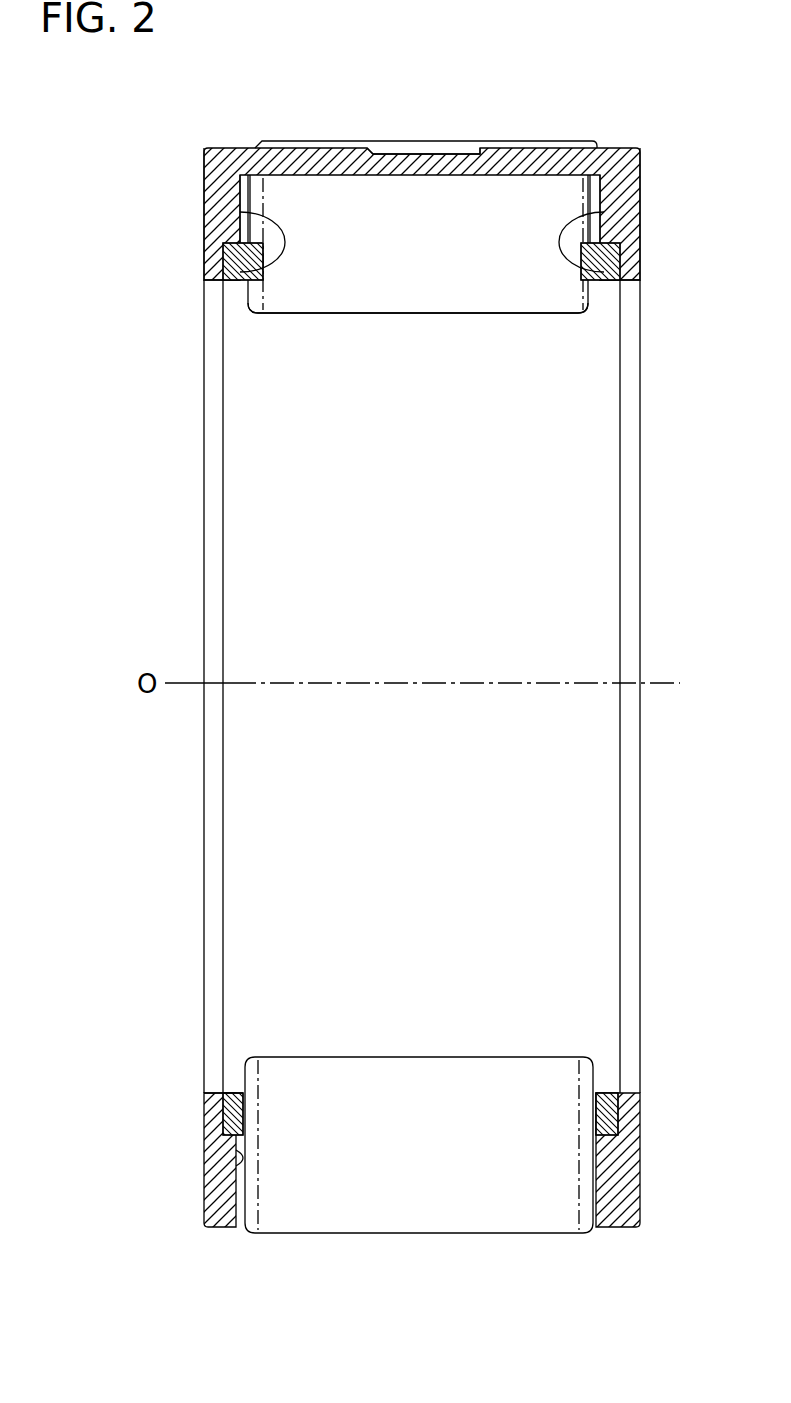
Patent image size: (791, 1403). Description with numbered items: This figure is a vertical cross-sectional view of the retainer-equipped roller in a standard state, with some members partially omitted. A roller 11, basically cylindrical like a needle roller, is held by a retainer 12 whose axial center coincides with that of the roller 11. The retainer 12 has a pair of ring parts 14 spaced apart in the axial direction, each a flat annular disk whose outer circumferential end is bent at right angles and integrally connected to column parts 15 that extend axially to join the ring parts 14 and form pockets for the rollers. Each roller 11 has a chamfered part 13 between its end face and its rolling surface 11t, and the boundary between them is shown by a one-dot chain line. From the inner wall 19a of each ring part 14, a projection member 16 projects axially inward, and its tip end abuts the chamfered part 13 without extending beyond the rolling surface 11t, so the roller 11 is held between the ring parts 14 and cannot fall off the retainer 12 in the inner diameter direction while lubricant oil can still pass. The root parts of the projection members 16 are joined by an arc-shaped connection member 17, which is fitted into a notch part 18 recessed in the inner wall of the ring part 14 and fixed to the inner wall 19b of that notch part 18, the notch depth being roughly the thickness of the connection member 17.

The roller 11 is at (582, 331).
The roller rolling surface 11t is at (342, 316).
The retainer 12 is at (182, 525).
The chamfered part 13 is at (253, 303).
The ring part 14 is at (204, 183).
The column part 15 is at (426, 146).
The projection member 16 is at (240, 212).
The connection member 17 is at (235, 265).
The notch part 18 is at (625, 262).
The inner wall 19a is at (245, 1152).
The inner wall of the notch part 19b is at (235, 1092).